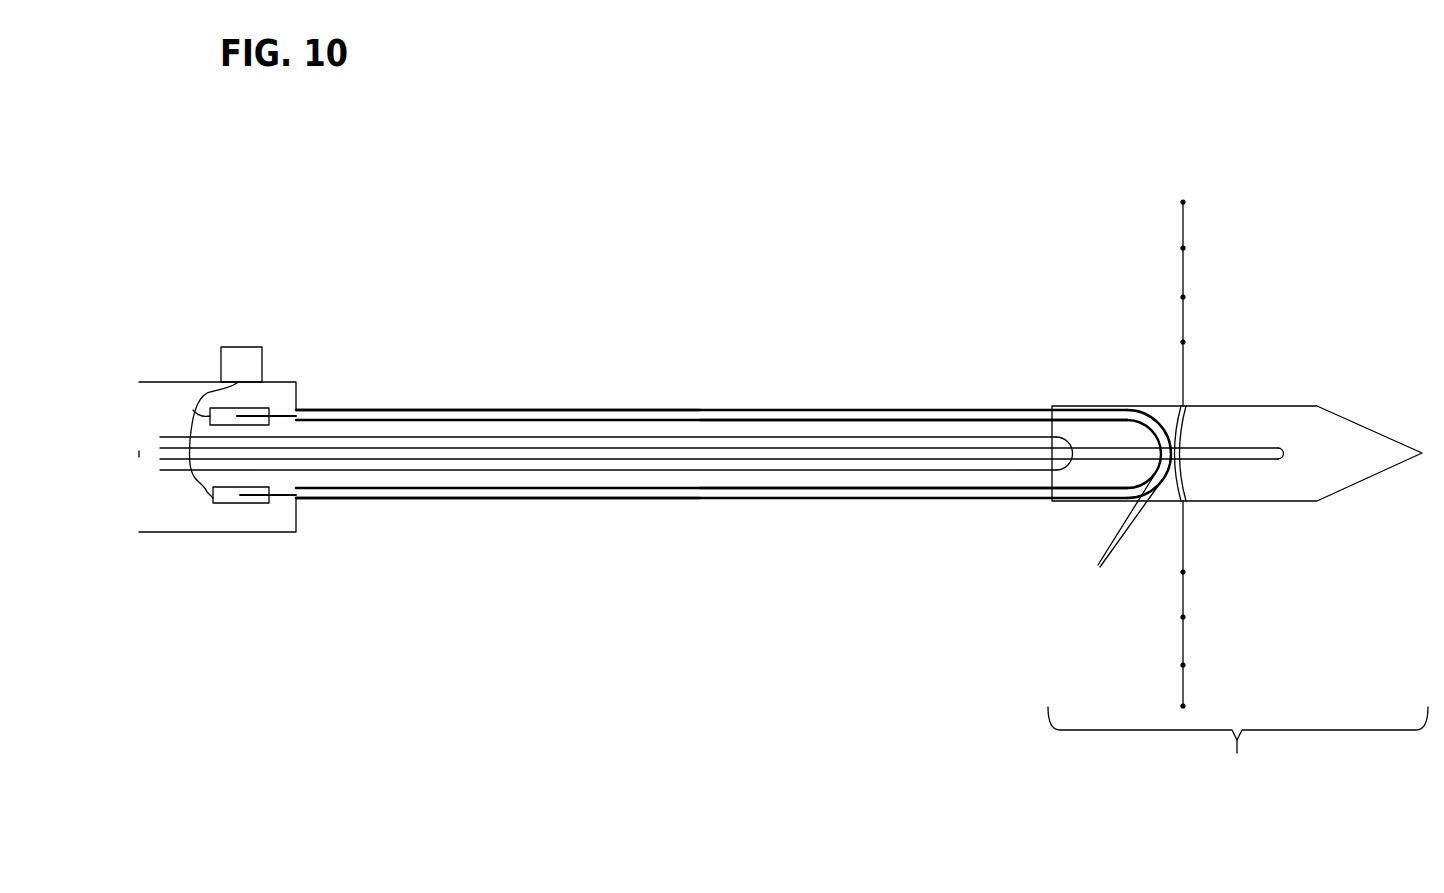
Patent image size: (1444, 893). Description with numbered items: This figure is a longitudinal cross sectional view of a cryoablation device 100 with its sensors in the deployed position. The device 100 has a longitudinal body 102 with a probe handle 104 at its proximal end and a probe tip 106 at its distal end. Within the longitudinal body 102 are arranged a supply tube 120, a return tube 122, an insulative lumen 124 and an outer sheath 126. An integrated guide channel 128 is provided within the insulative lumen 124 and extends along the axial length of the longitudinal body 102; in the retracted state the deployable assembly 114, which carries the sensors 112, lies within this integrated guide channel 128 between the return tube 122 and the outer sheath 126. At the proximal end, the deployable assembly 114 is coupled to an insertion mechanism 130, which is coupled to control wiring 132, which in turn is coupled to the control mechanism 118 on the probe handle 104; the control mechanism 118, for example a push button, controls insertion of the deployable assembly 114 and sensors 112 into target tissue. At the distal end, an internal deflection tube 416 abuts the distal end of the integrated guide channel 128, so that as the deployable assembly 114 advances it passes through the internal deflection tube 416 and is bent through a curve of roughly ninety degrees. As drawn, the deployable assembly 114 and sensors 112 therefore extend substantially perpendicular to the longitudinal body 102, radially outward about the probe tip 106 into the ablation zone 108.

The device 100 is at (651, 210).
The longitudinal body 102 is at (884, 337).
The probe handle 104 is at (165, 532).
The probe tip 106 is at (1315, 340).
The ablation zone 108 is at (1238, 748).
The sensors 112 is at (1183, 342).
The deployable assembly 114 is at (808, 415).
The control mechanism 118 is at (245, 365).
The supply tube 120 is at (1128, 445).
The return tube 122 is at (1033, 437).
The insulative lumen 124 is at (792, 480).
The outer sheath 126 is at (522, 498).
The integrated guide channel 128 is at (563, 413).
The insertion mechanism 130 is at (240, 502).
The control wiring 132 is at (204, 397).
The internal deflection tube 416 is at (1170, 455).